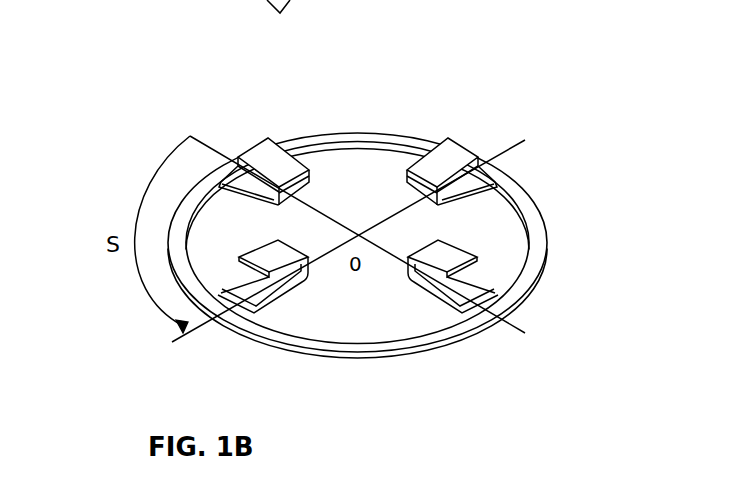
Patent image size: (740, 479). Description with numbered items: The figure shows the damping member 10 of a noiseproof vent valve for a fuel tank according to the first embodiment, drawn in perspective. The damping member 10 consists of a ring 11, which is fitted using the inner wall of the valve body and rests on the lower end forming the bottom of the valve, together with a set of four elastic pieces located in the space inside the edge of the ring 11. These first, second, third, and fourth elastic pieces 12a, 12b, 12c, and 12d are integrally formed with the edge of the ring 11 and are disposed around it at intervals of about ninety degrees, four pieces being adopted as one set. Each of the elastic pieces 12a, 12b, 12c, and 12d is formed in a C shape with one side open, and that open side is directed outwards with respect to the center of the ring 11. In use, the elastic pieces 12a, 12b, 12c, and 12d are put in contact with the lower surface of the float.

The damping member 10 is at (302, 108).
The ring 11 is at (365, 136).
The first elastic piece 12a is at (265, 147).
The second elastic piece 12b is at (267, 257).
The third elastic piece 12c is at (448, 253).
The fourth elastic piece 12d is at (443, 157).